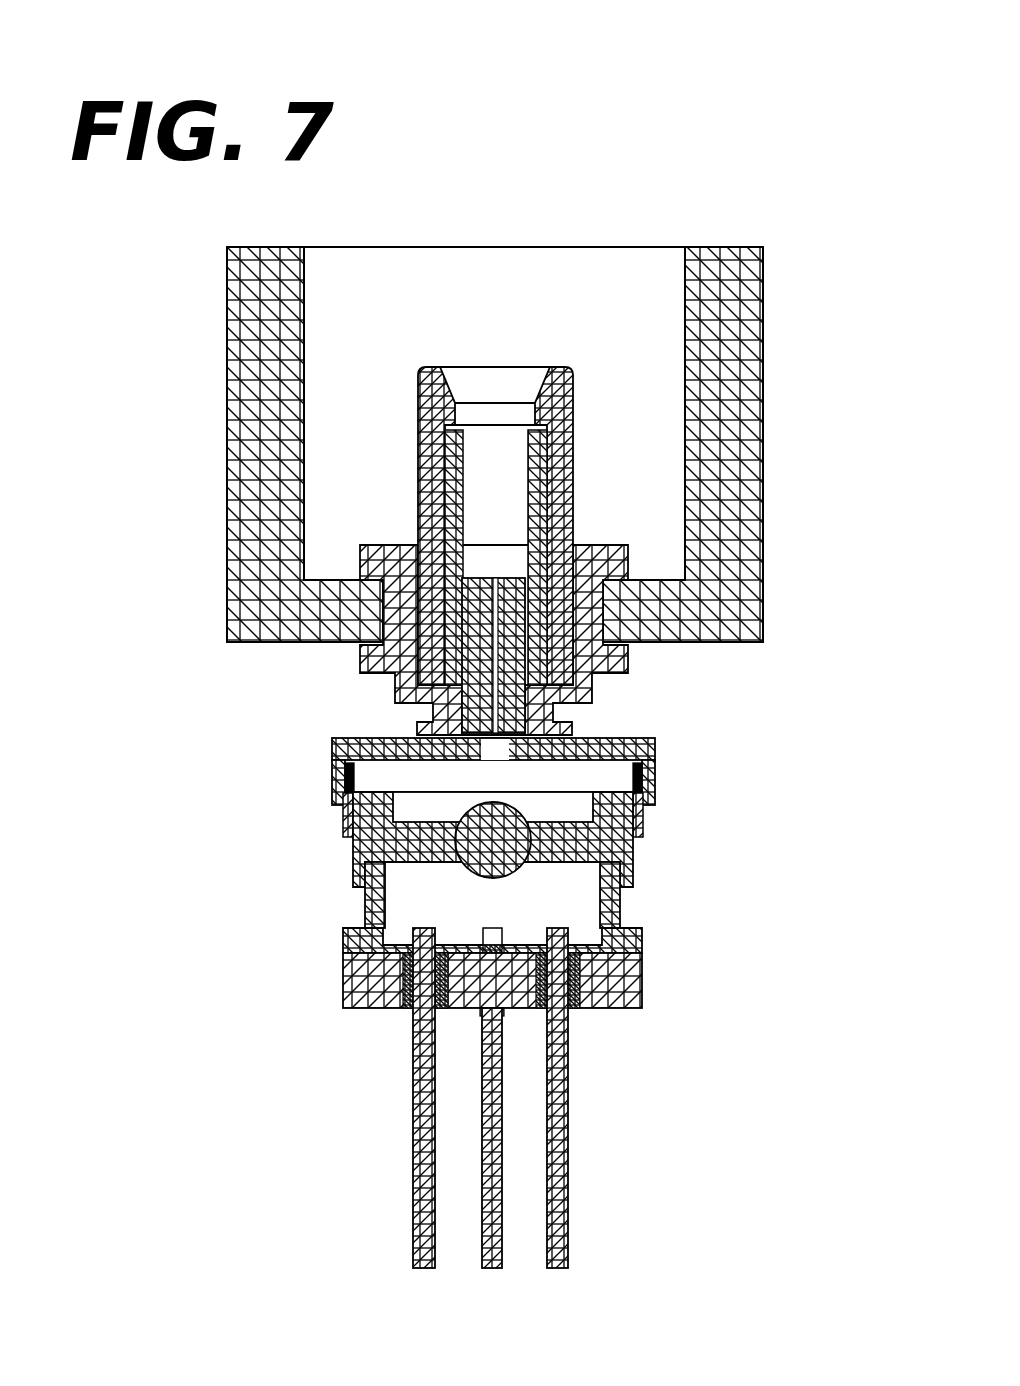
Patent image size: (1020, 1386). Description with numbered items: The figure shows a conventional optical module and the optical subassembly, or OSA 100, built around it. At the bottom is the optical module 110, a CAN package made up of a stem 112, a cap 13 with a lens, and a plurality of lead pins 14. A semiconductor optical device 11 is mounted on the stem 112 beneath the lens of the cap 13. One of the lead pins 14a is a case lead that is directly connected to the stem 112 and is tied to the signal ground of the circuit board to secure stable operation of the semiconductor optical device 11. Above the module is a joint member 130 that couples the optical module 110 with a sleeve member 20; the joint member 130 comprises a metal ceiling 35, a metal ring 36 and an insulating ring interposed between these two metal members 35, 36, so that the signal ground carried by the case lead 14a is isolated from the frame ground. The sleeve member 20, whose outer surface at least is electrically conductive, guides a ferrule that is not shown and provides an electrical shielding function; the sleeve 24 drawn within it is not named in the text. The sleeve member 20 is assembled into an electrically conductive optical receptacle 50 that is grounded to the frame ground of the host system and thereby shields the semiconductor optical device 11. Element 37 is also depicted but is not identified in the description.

The OSA 100 is at (606, 224).
The optical receptacle 50 is at (765, 296).
The sleeve member 20 is at (205, 365).
The sleeve 24 is at (418, 388).
The optical module 110 is at (203, 790).
The joint member 130 is at (300, 735).
The metal ceiling 35 is at (646, 738).
The ring 37 is at (645, 820).
The metal ring 36 is at (636, 872).
The cap 13 is at (622, 908).
The semiconductor optical device 11 is at (503, 945).
The stem 112 is at (644, 968).
The lead pins 14 is at (575, 1278).
The case lead 14a is at (482, 1148).